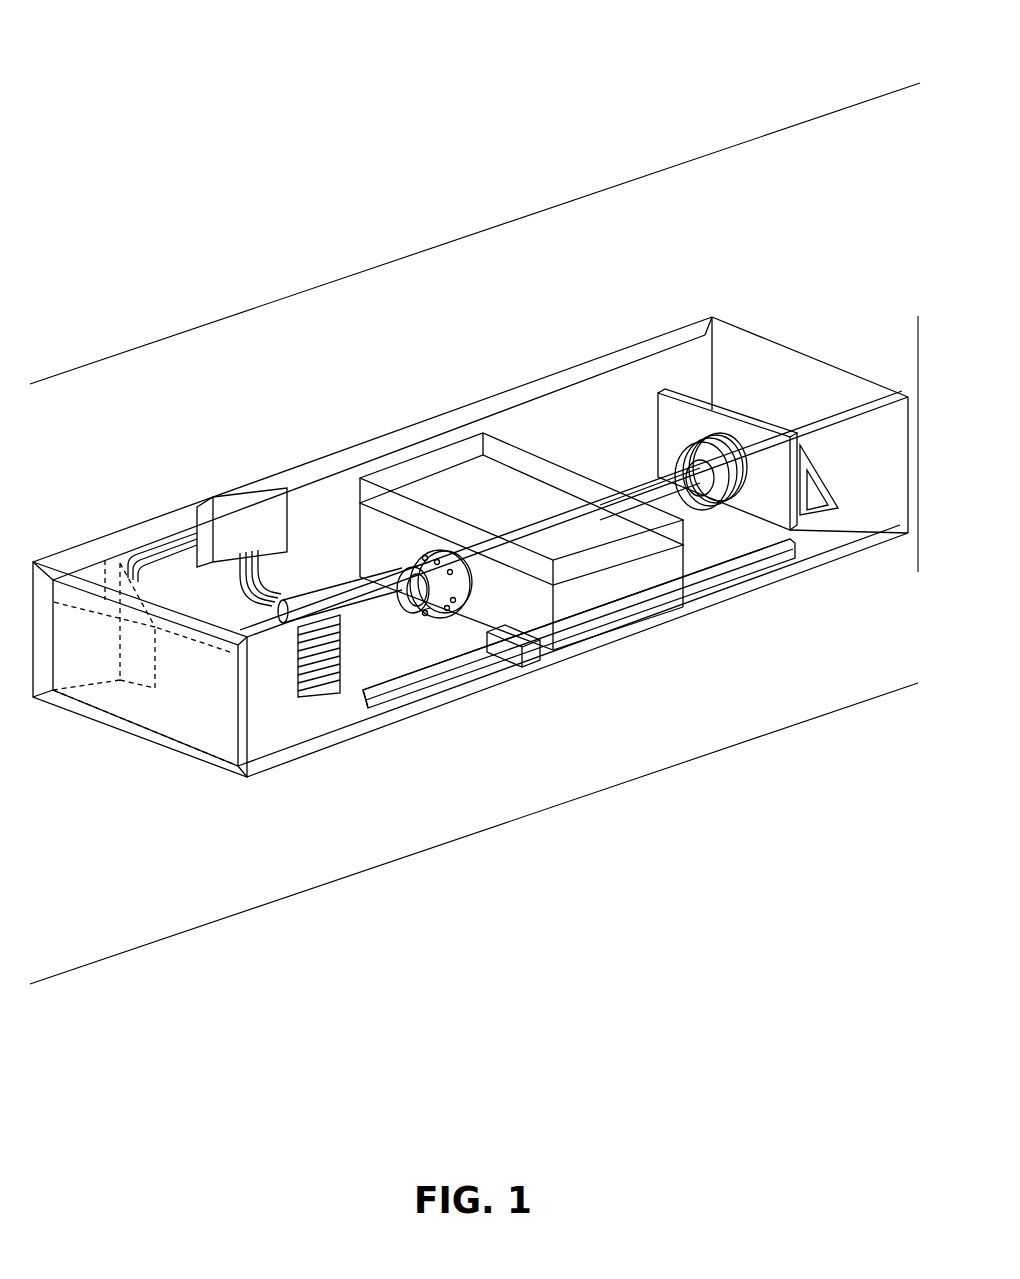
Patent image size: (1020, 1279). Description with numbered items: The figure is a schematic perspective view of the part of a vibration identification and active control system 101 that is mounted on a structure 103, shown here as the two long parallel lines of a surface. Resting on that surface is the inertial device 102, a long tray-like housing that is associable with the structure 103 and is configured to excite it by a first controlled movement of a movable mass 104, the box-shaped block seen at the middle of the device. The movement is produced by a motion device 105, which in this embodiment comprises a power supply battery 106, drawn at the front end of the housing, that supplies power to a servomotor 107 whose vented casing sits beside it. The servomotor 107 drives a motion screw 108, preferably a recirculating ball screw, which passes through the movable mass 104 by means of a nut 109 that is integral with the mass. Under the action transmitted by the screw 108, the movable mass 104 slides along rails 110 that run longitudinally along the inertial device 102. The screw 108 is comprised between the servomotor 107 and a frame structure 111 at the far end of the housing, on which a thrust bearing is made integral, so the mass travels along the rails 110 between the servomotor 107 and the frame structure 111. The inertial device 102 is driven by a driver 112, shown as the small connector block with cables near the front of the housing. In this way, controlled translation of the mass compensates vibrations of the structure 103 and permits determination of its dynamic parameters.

The system 101 is at (348, 210).
The inertial device 102 is at (290, 444).
The structure 103 is at (748, 140).
The movable mass 104 is at (558, 480).
The motion device 105 is at (332, 552).
The power supply battery 106 is at (187, 718).
The servomotor 107 is at (312, 672).
The motion screw 108 is at (398, 598).
The nut 109 is at (452, 588).
The rails 110 is at (723, 567).
The frame structure 111 is at (798, 493).
The driver 112 is at (250, 533).